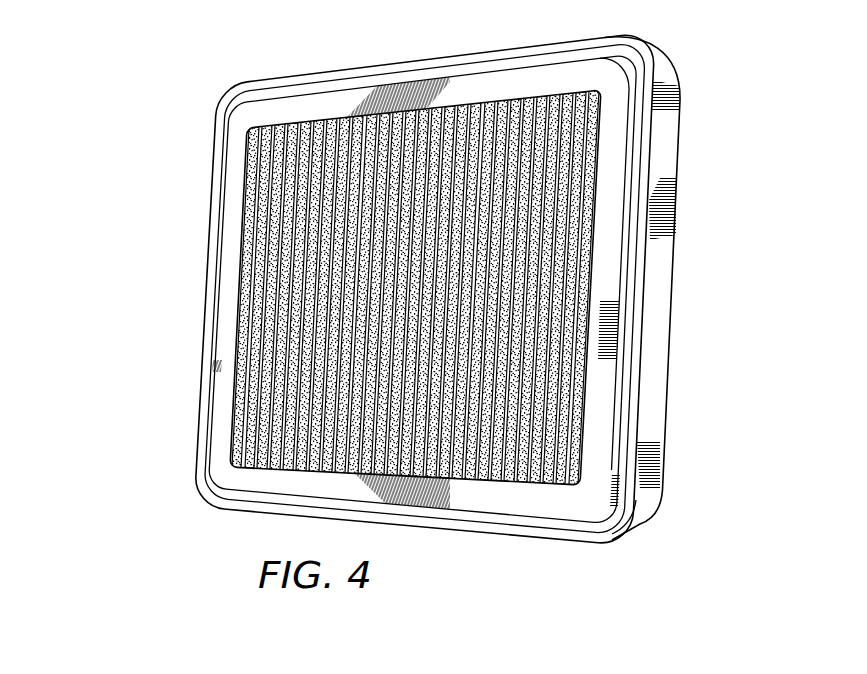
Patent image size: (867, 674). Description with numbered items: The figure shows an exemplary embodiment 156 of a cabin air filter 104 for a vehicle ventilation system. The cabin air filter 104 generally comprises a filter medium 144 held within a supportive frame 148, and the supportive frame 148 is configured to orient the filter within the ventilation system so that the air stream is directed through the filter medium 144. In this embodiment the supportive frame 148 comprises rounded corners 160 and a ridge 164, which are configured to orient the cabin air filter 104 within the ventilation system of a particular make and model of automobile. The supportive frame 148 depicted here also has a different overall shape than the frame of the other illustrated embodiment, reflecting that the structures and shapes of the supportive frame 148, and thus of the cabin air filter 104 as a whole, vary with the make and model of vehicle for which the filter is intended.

The cabin air filter 104 is at (266, 84).
The filter medium 144 is at (565, 296).
The supportive frame 148 is at (213, 415).
The exemplary embodiment 156 is at (141, 191).
The rounded corners 160 is at (226, 100).
The ridge 164 is at (641, 135).